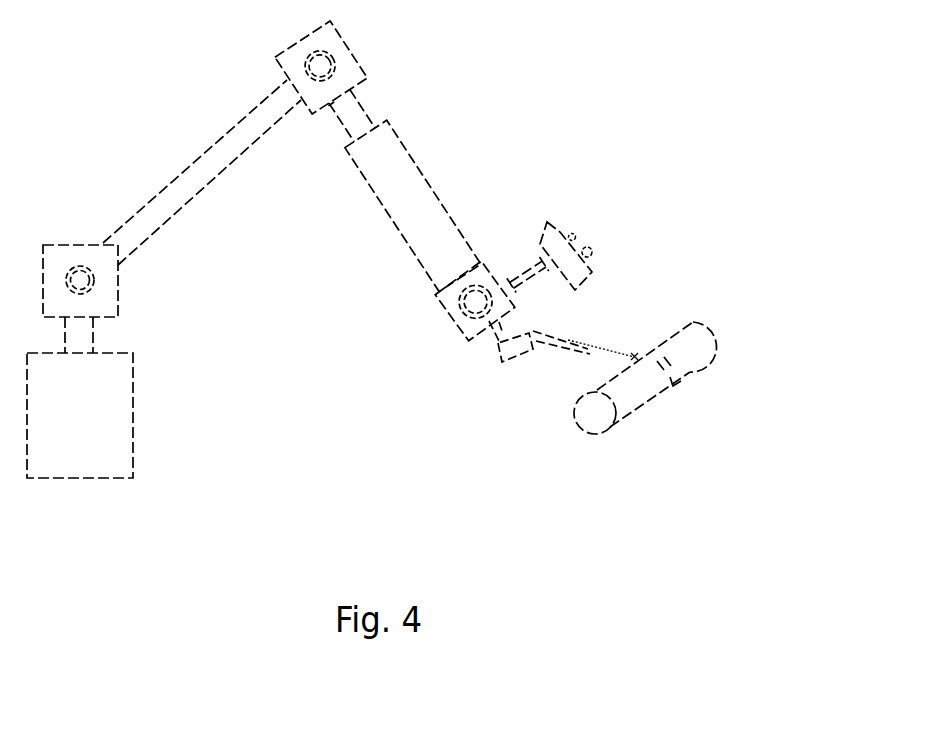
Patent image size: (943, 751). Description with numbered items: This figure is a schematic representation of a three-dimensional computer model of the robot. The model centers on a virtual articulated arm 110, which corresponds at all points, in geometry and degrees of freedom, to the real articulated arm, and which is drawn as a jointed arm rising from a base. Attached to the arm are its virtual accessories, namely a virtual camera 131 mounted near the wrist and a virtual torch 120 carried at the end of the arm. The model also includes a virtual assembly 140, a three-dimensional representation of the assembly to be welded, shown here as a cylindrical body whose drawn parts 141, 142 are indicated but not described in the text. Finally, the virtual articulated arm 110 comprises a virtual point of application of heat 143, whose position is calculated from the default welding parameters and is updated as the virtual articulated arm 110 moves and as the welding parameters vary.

The virtual articulated arm 110 is at (205, 153).
The virtual torch 120 is at (530, 343).
The virtual camera 131 is at (558, 226).
The virtual assembly 140 is at (692, 350).
The workpiece first part 141 is at (642, 406).
The workpiece second part 142 is at (692, 372).
The virtual point of application of heat 143 is at (634, 358).